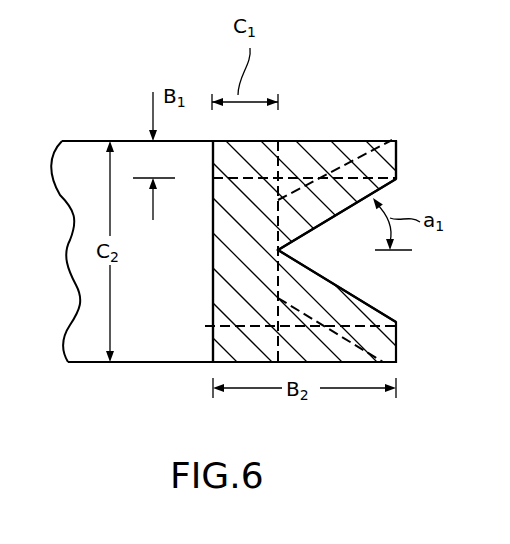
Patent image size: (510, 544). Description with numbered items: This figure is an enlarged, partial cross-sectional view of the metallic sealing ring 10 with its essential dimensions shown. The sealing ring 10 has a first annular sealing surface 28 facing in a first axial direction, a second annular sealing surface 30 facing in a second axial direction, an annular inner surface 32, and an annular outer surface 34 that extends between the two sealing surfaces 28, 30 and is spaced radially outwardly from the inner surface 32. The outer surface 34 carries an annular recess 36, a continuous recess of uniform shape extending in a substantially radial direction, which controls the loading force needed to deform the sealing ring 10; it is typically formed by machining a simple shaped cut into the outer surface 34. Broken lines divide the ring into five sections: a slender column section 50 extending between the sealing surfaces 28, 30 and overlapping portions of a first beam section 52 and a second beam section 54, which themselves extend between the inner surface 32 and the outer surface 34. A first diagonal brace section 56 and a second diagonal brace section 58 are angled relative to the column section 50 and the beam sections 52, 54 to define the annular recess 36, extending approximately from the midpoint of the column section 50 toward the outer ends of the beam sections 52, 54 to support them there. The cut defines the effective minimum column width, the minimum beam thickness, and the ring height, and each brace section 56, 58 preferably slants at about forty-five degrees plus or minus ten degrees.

The metallic sealing ring 10 is at (117, 102).
The first annular sealing surface 28 is at (193, 375).
The second annular sealing surface 30 is at (390, 134).
The annular inner surface 32 is at (205, 306).
The annular outer surface 34 is at (404, 153).
The annular recess 36 is at (337, 288).
The slender column section 50 is at (213, 247).
The first beam section 52 is at (328, 128).
The second beam section 54 is at (207, 347).
The first diagonal brace section 56 is at (318, 238).
The second diagonal brace section 58 is at (378, 308).